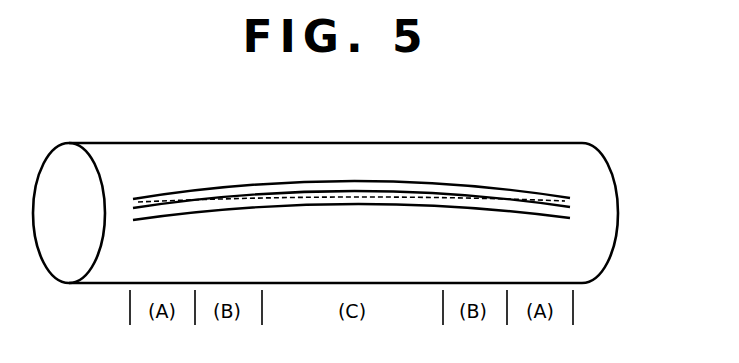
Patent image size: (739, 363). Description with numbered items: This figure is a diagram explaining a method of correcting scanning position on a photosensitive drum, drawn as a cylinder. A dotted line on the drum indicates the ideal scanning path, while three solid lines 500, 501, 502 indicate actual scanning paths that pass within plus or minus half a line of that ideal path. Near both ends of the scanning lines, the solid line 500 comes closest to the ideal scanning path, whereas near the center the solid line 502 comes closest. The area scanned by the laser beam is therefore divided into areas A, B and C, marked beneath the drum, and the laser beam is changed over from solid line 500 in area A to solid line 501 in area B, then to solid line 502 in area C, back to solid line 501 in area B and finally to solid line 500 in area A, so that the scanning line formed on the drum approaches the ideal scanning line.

The solid line 500 is at (322, 181).
The solid line 501 is at (417, 191).
The solid line 502 is at (540, 216).